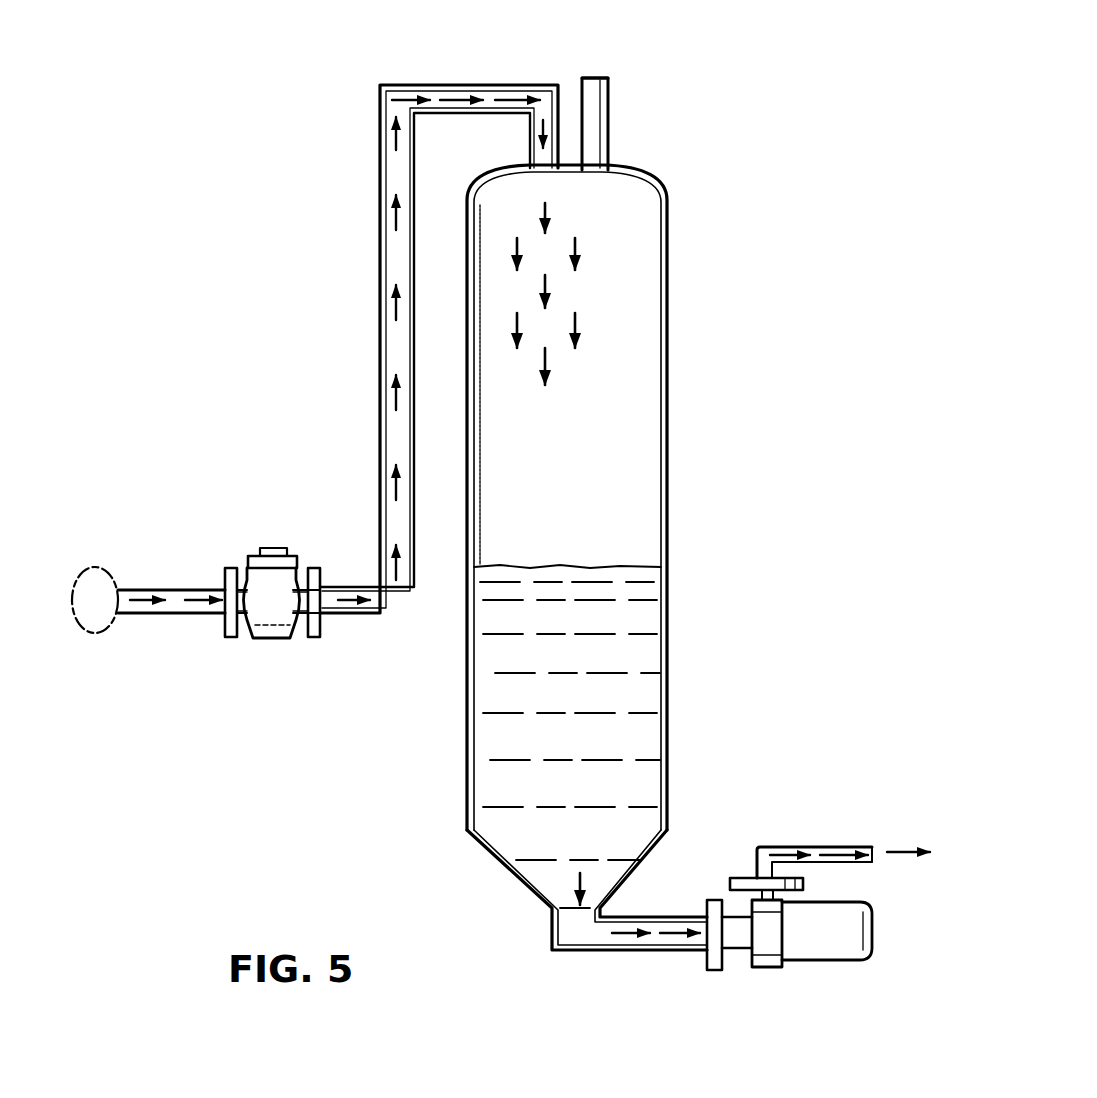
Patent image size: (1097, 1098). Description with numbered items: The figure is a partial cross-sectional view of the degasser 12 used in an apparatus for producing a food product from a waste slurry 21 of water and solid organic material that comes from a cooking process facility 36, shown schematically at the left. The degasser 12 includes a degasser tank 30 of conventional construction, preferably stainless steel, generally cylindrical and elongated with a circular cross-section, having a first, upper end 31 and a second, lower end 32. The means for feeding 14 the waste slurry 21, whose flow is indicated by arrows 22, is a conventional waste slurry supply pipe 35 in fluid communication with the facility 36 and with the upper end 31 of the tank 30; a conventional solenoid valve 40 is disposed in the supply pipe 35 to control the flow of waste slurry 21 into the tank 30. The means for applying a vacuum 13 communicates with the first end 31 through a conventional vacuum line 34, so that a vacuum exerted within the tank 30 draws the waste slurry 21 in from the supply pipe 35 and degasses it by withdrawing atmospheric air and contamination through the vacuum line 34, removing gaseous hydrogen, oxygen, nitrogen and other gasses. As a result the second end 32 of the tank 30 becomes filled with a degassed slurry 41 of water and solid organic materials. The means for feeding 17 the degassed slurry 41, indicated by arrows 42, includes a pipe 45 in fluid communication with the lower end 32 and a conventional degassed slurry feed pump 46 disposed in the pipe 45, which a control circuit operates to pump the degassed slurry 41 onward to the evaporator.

The degasser 12 is at (641, 548).
The means for applying a vacuum 13 is at (614, 80).
The means for feeding the waste slurry 14 is at (283, 538).
The means for feeding degassed slurry 17 is at (786, 845).
The waste slurry 21 is at (155, 622).
The arrows 22 is at (545, 292).
The degasser tank 30 is at (668, 540).
The first end 31 is at (672, 198).
The second end 32 is at (682, 814).
The vacuum line 34 is at (610, 130).
The waste slurry supply pipe 35 is at (470, 80).
The cooking process facility 36 is at (110, 642).
The solenoid valve 40 is at (280, 591).
The degassed slurry 41 is at (640, 731).
The arrows 42 is at (615, 937).
The pipe 45 is at (676, 955).
The degassed slurry feed pump 46 is at (820, 955).